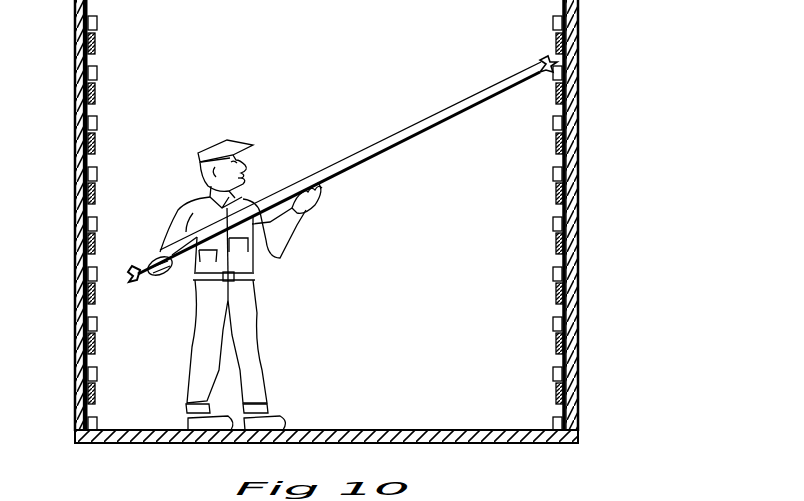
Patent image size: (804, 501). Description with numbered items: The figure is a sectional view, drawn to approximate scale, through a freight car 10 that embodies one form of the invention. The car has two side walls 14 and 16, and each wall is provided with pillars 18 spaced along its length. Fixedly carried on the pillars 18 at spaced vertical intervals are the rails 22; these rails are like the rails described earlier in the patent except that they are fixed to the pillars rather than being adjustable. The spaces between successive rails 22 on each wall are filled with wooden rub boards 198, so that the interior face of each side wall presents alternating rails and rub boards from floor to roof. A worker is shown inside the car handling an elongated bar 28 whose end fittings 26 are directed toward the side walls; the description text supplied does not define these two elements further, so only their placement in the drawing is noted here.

The freight car 10 is at (580, 240).
The side wall 14 is at (575, 144).
The side wall 16 is at (79, 229).
The pillar 18 is at (82, 168).
The rail 22 is at (98, 121).
The wooden rub board 198 is at (97, 45).
The rod end tips 26 is at (138, 280).
The rod 28 is at (372, 157).